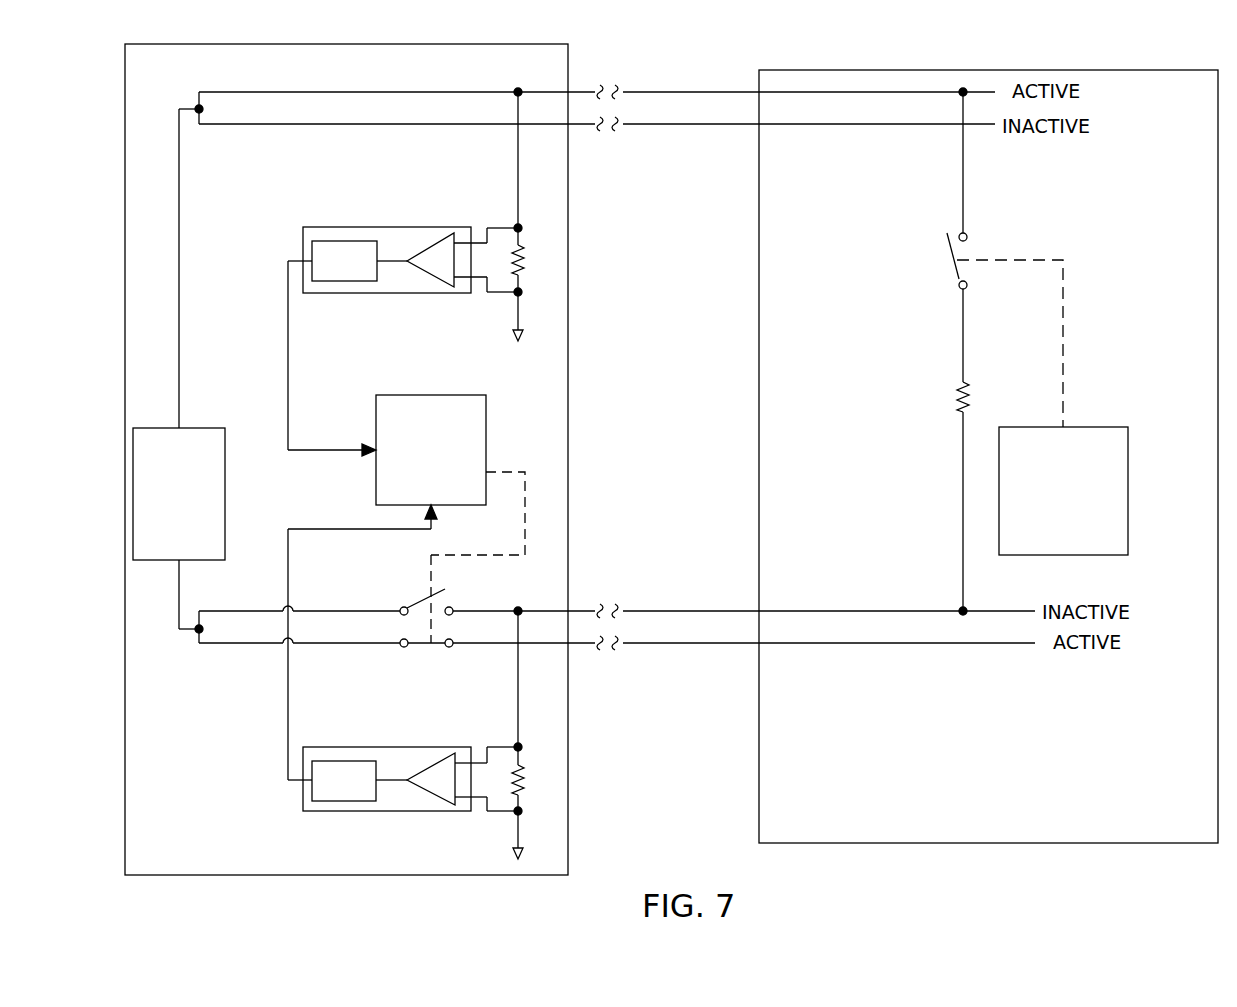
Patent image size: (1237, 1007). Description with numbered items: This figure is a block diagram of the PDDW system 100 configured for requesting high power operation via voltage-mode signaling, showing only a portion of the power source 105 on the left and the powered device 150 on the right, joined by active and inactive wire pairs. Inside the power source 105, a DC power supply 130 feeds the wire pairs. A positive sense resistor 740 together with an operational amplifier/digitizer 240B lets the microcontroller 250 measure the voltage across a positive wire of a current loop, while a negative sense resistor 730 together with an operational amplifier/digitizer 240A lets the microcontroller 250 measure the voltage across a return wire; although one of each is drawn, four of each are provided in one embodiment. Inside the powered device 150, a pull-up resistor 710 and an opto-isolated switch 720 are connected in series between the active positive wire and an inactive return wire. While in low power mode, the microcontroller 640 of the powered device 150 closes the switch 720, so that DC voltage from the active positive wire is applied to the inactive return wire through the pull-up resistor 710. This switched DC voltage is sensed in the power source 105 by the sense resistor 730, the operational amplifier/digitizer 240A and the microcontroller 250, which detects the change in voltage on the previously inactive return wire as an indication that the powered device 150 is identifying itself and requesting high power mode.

The PDDW system 100 is at (1150, 40).
The power source 105 is at (346, 459).
The powered device 150 is at (988, 456).
The DC power supply 130 is at (179, 494).
The microcontroller 250 is at (431, 450).
The microcontroller 640 is at (1063, 491).
The operational amplifier/digitizer 240A is at (328, 811).
The operational amplifier/digitizer 240B is at (430, 293).
The pull-up resistor 710 is at (955, 413).
The opto-isolated switch 720 is at (952, 268).
The negative sense resistor 730 is at (552, 786).
The positive sense resistor 740 is at (552, 267).